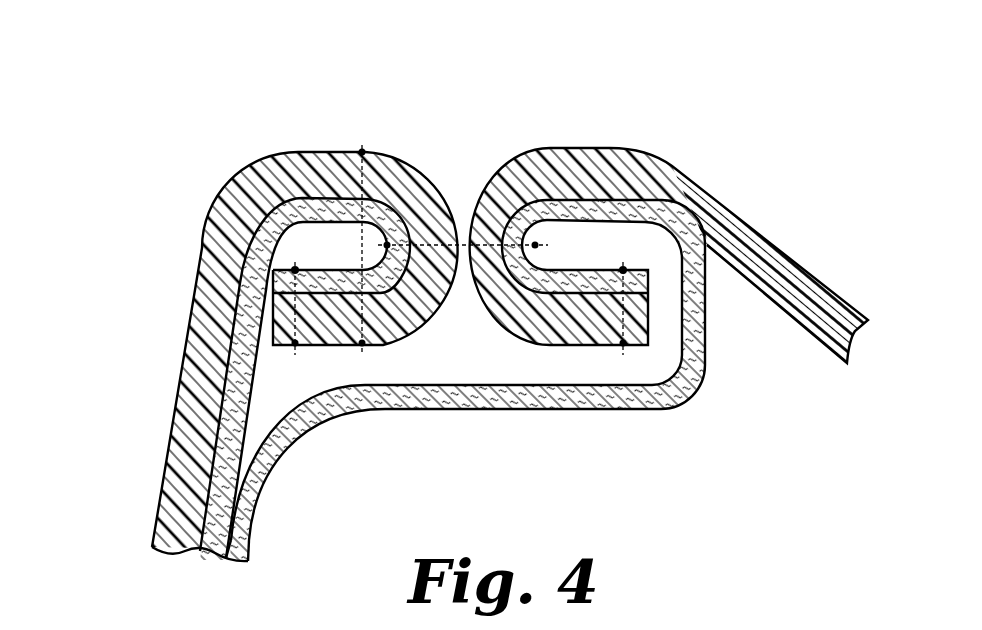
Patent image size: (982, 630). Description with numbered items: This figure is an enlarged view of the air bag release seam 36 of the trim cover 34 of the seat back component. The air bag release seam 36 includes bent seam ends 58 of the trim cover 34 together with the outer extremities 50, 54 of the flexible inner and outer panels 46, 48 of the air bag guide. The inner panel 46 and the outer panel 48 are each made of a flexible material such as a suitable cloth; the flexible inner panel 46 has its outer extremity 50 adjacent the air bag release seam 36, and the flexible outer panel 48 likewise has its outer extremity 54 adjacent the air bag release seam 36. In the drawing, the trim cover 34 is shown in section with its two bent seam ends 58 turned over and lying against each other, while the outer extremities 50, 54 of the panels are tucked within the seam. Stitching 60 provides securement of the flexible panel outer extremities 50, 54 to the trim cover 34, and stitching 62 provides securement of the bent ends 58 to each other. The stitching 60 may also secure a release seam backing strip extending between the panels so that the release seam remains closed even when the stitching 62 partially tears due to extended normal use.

The trim cover 34 is at (709, 180).
The air bag release seam 36 is at (455, 108).
The inner panel 46 is at (287, 458).
The outer panel 48 is at (200, 469).
The outer extremity of the inner panel 50 is at (568, 411).
The outer extremity of the outer panel 54 is at (227, 358).
The bent seam ends 58 is at (432, 162).
The stitching 60 is at (623, 312).
The stitching 62 is at (534, 152).